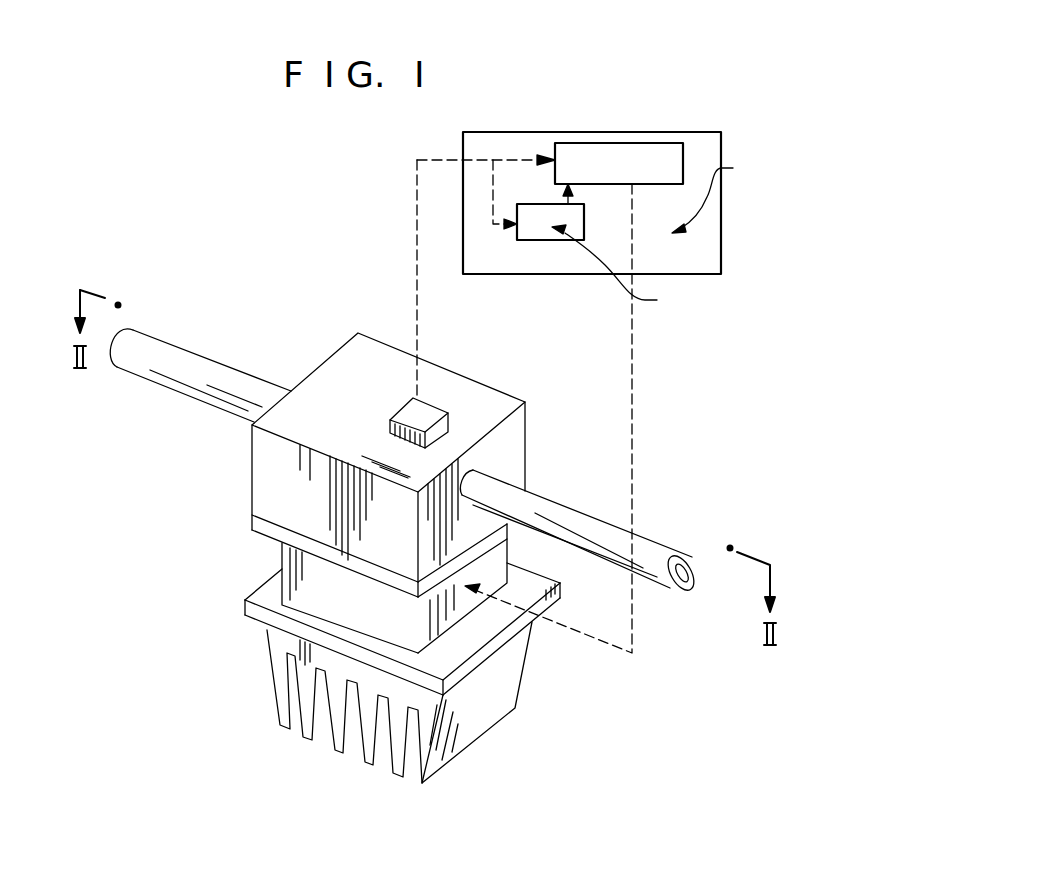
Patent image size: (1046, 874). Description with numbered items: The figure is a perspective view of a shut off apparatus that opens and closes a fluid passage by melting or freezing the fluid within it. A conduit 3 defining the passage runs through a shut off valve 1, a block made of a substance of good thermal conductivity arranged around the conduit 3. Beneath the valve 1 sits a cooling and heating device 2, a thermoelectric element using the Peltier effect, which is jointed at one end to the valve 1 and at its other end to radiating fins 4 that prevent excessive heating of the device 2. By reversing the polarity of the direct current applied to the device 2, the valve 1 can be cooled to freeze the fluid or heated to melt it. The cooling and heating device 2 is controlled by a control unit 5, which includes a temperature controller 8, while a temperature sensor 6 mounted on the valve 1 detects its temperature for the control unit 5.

The shut off valve 1 is at (482, 394).
The cooling and heating device 2 is at (278, 560).
The conduit 3 is at (667, 540).
The radiating fins 4 is at (480, 723).
The control unit 5 is at (722, 245).
The temperature sensor 6 is at (400, 413).
The temperature controller 8 is at (540, 240).